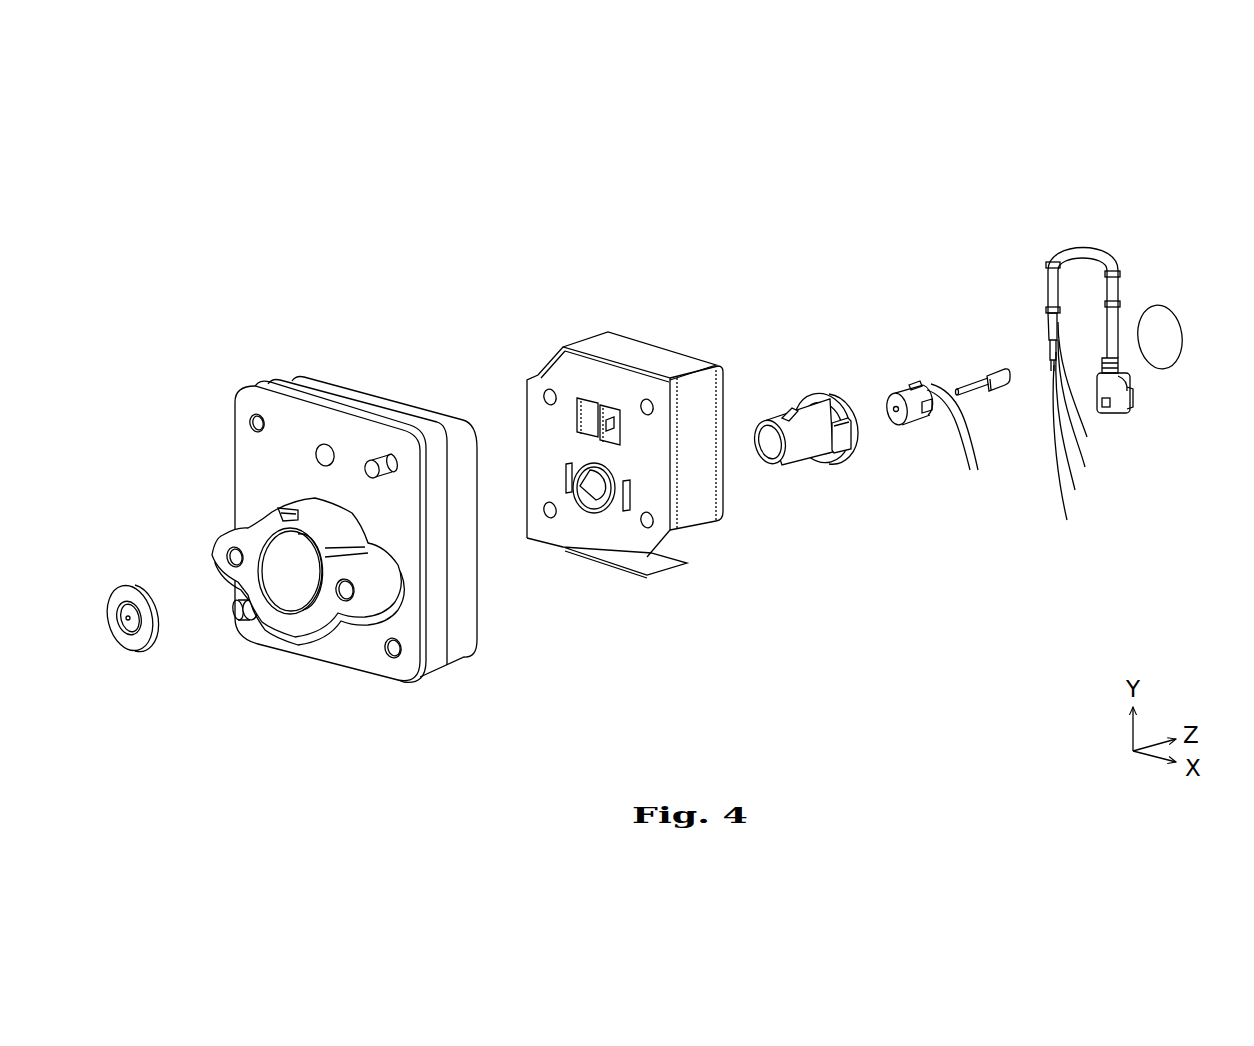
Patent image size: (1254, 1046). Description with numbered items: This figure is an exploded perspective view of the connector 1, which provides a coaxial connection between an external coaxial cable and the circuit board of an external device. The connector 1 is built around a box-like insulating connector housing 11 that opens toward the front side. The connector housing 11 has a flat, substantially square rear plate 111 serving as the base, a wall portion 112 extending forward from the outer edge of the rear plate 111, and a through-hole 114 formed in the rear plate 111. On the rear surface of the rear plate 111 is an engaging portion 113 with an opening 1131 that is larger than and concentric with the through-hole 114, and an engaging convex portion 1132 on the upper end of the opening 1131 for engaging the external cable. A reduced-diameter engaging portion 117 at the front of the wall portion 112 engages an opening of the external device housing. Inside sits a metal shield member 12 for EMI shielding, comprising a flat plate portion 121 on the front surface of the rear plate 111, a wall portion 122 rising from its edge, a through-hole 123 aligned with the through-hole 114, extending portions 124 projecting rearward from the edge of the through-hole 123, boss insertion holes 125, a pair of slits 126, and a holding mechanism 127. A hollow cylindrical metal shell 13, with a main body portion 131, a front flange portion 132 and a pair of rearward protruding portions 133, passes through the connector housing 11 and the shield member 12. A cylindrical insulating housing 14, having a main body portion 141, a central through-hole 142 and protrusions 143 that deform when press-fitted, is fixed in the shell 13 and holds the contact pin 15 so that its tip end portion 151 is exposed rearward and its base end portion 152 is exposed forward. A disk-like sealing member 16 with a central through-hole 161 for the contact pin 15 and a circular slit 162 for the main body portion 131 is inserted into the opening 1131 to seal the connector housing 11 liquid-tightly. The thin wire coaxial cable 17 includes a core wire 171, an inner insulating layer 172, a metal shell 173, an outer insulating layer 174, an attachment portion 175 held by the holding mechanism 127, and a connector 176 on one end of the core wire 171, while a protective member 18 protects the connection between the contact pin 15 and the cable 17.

The connector 1 is at (1124, 132).
The connector housing 11 is at (372, 350).
The rear plate 111 is at (365, 660).
The wall portion 112 is at (428, 650).
The engaging portion 113 is at (228, 540).
The opening 1131 is at (290, 600).
The engaging convex portion 1132 is at (280, 506).
The through-hole 114 is at (317, 573).
The engaging portion 117 is at (463, 637).
The shield member 12 is at (648, 302).
The flat plate portion 121 is at (622, 555).
The wall portion 122 is at (700, 512).
The through-hole 123 is at (595, 512).
The extending portions 124 is at (606, 482).
The boss insertion holes 125 is at (548, 390).
The slits 126 is at (563, 473).
The holding mechanism 127 is at (580, 400).
The shell 13 is at (815, 362).
The main body portion 131 is at (799, 448).
The flange portion 132 is at (833, 463).
The protruding portions 133 is at (790, 408).
The housing 14 is at (908, 362).
The main body portion 141 is at (917, 415).
The through-hole 142 is at (890, 400).
The protrusions 143 is at (940, 452).
The contact pin 15 is at (981, 360).
The tip end portion 151 is at (970, 392).
The base end portion 152 is at (1007, 383).
The sealing member 16 is at (121, 576).
The through-hole 161 is at (116, 636).
The circular slit 162 is at (134, 636).
The thin wire coaxial cable 17 is at (1084, 229).
The core wire 171 is at (1078, 451).
The inner insulating layer 172 is at (1084, 429).
The metal shell 173 is at (1090, 412).
The outer insulating layer 174 is at (1091, 387).
The attachment portion 175 is at (1052, 293).
The connector 176 is at (1125, 425).
The protective member 18 is at (1190, 316).